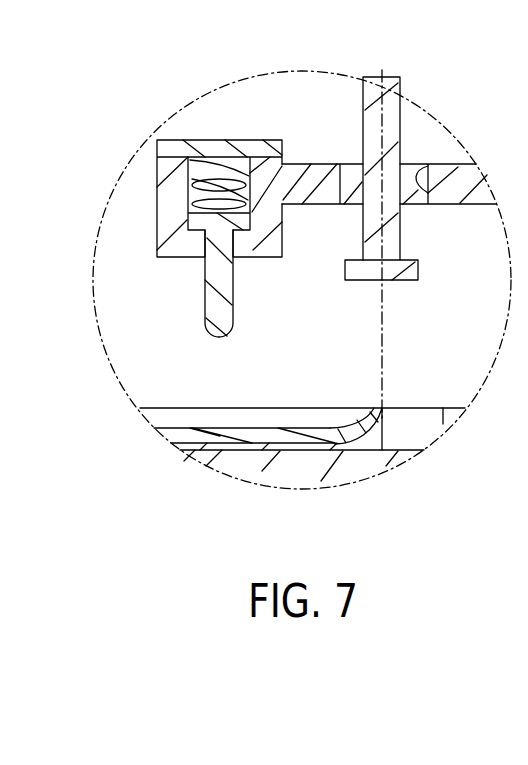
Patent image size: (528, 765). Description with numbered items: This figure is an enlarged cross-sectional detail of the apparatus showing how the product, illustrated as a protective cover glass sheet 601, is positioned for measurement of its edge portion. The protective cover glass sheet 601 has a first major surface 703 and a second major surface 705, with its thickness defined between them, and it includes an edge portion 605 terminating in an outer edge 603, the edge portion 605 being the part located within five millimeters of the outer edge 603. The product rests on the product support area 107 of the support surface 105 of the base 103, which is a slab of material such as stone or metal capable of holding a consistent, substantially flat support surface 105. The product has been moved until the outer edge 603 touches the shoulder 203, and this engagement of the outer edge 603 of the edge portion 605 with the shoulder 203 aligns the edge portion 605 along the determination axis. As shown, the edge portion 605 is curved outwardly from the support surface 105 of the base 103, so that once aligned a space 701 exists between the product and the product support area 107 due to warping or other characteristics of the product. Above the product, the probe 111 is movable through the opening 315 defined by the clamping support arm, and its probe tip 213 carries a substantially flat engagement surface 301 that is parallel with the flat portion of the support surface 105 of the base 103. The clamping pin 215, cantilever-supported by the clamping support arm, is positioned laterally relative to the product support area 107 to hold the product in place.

The probe 111 is at (401, 101).
The opening 315 is at (432, 169).
The probe tip 213 is at (418, 266).
The engagement surface 301 is at (405, 283).
The clamping pin 215 is at (203, 264).
The edge portion 605 is at (357, 407).
The outer edge 603 is at (368, 430).
The protective cover glass sheet 601 is at (258, 413).
The second major surface 705 is at (233, 428).
The support surface 105 is at (190, 430).
The product support area 107 is at (289, 441).
The space 701 is at (202, 452).
The base 103 is at (222, 455).
The first major surface 703 is at (258, 445).
The shoulder 203 is at (363, 452).